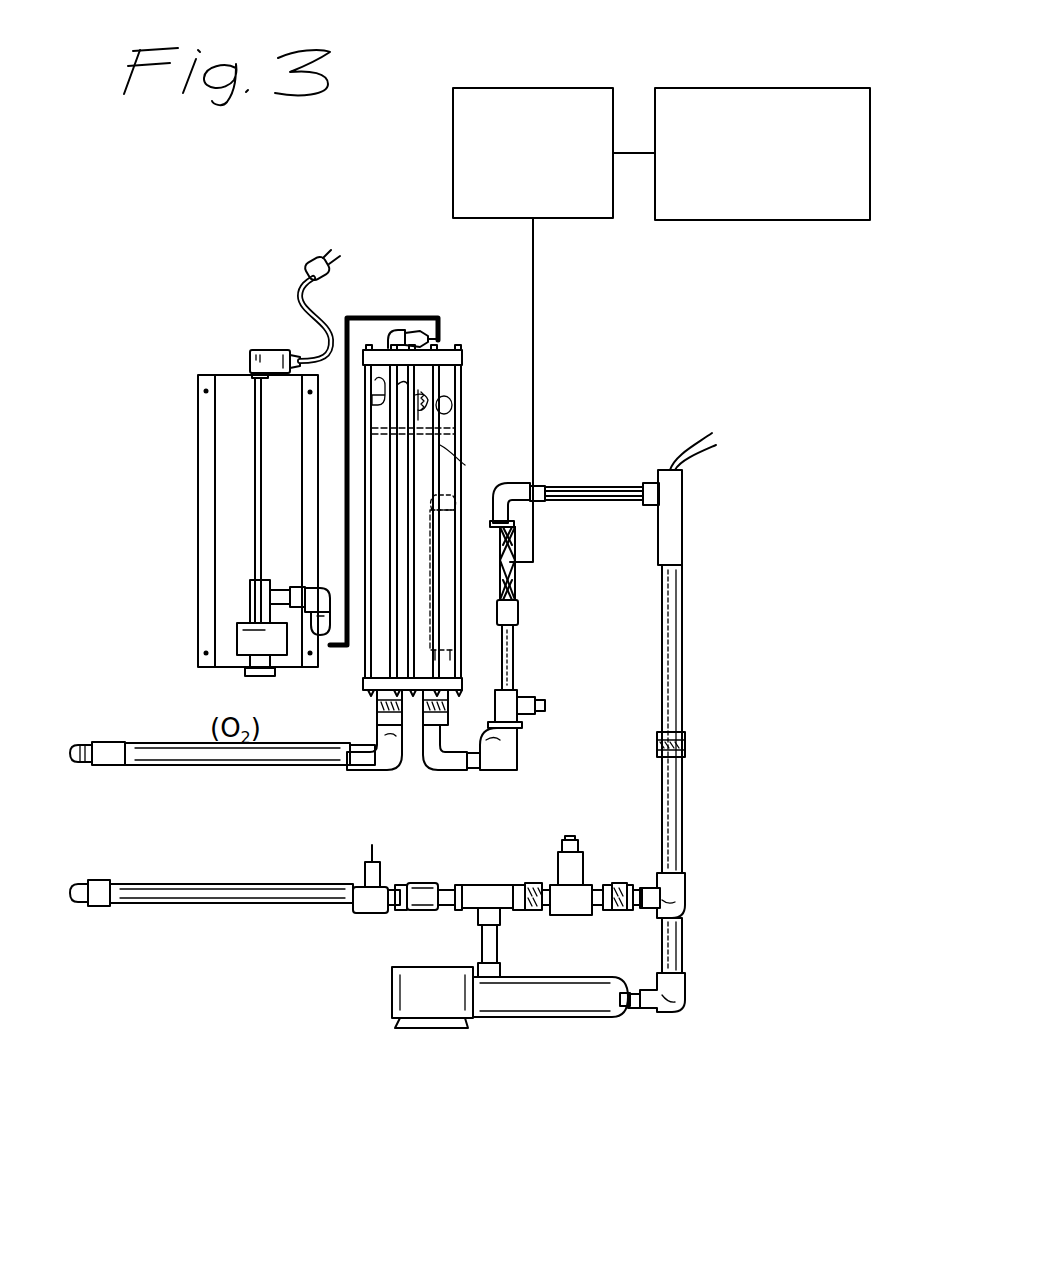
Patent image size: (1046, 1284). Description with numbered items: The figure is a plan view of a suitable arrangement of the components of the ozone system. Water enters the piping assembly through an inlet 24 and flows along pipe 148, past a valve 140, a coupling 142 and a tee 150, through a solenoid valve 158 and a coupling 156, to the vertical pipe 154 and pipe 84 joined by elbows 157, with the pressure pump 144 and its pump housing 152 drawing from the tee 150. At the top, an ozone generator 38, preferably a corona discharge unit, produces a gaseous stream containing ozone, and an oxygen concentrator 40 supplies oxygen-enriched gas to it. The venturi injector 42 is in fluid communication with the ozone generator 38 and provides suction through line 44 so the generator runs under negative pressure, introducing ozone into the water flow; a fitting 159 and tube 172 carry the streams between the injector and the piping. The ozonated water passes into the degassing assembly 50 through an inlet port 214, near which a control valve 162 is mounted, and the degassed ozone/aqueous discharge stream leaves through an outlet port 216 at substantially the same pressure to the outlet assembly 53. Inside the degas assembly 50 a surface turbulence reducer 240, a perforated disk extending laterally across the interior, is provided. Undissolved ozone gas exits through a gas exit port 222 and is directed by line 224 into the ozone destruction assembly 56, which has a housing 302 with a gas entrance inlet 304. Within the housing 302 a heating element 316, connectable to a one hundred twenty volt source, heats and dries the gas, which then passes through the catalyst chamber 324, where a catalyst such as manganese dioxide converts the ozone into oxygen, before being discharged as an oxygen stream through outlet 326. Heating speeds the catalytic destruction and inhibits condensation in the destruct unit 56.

The ozone generator 38 is at (485, 74).
The oxygen concentrator 40 is at (745, 88).
The line 44 is at (535, 322).
The degassing assembly 50 is at (486, 421).
The surface turbulence reducer 240 is at (452, 455).
The line 224 is at (390, 316).
The gas exit port 222 is at (440, 335).
The housing 302 is at (215, 378).
The ozone destruction assembly 56 is at (230, 477).
The heating element 316 is at (254, 415).
The gas entrance inlet 304 is at (305, 598).
The chamber 324 is at (240, 655).
The outlet 326 is at (268, 690).
The venturi injector 42 is at (512, 585).
The tube fitting 159 is at (515, 652).
The inlet port 214 is at (470, 707).
The control valve 162 is at (545, 705).
The outlet port 216 is at (380, 722).
The outlet assembly 53 is at (167, 765).
The tube 172 is at (690, 463).
The vertical pipe 154 is at (682, 770).
The coupling 156 is at (612, 860).
The elbow 157 is at (682, 882).
The pipe 84 is at (700, 948).
The inlet 24 is at (93, 907).
The pipe 148 is at (203, 903).
The valve 140 is at (365, 888).
The coupling 142 is at (422, 886).
The tee pipe 150 is at (480, 943).
The solenoid valve 158 is at (575, 845).
The pressure pump 144 is at (484, 1032).
The pump housing 152 is at (632, 1018).